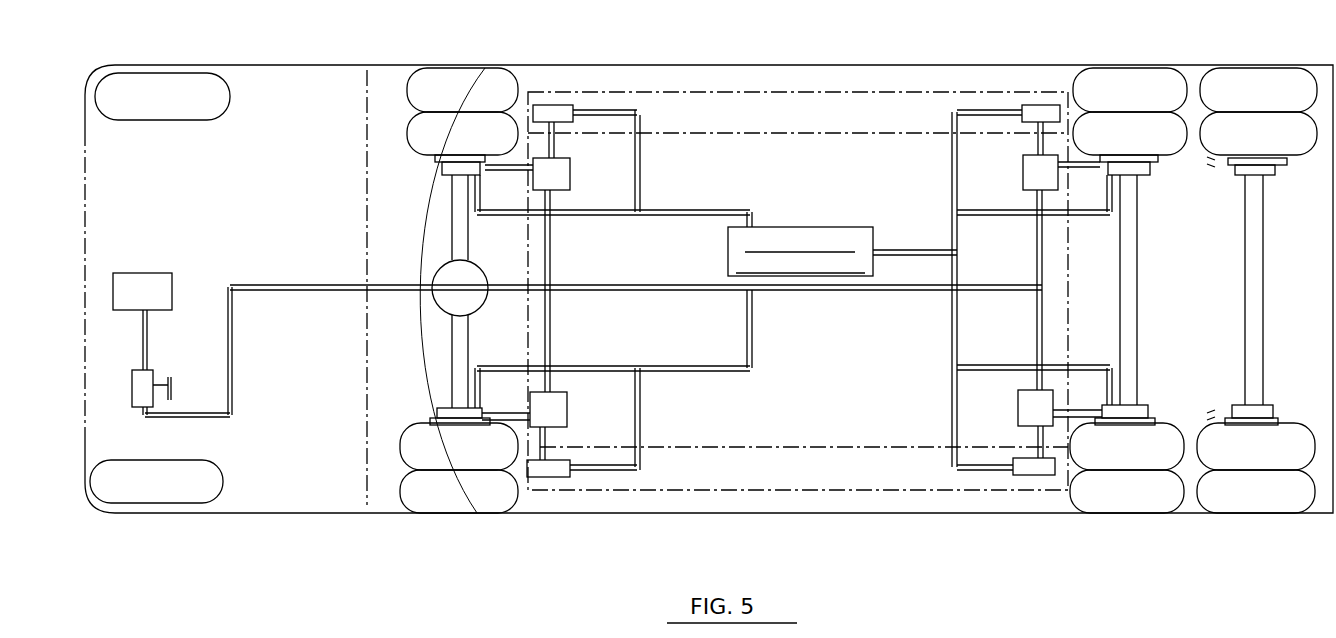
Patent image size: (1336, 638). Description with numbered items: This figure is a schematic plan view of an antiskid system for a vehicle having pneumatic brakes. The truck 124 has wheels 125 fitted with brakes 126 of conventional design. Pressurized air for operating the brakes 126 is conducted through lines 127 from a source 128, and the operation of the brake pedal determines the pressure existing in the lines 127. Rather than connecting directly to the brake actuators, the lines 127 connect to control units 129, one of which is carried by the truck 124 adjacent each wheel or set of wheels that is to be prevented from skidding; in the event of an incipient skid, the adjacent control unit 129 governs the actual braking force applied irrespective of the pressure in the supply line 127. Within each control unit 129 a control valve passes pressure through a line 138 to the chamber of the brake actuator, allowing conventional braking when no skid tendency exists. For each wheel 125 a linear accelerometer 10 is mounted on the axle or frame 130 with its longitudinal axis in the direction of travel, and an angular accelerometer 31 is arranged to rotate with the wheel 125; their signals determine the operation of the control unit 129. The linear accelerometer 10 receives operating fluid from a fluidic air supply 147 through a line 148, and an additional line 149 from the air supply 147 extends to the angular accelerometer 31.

The linear accelerometer 10 is at (553, 112).
The angular accelerometer 31 is at (447, 176).
The truck 124 is at (313, 514).
The wheels 125 is at (447, 88).
The brakes 126 is at (437, 159).
The lines 127 is at (552, 272).
The source 128 is at (142, 276).
The control units 129 is at (560, 182).
The frame 130 is at (748, 148).
The line 138 is at (517, 143).
The fluidic air supply 147 is at (848, 232).
The line 148 is at (640, 180).
The line 149 is at (505, 215).